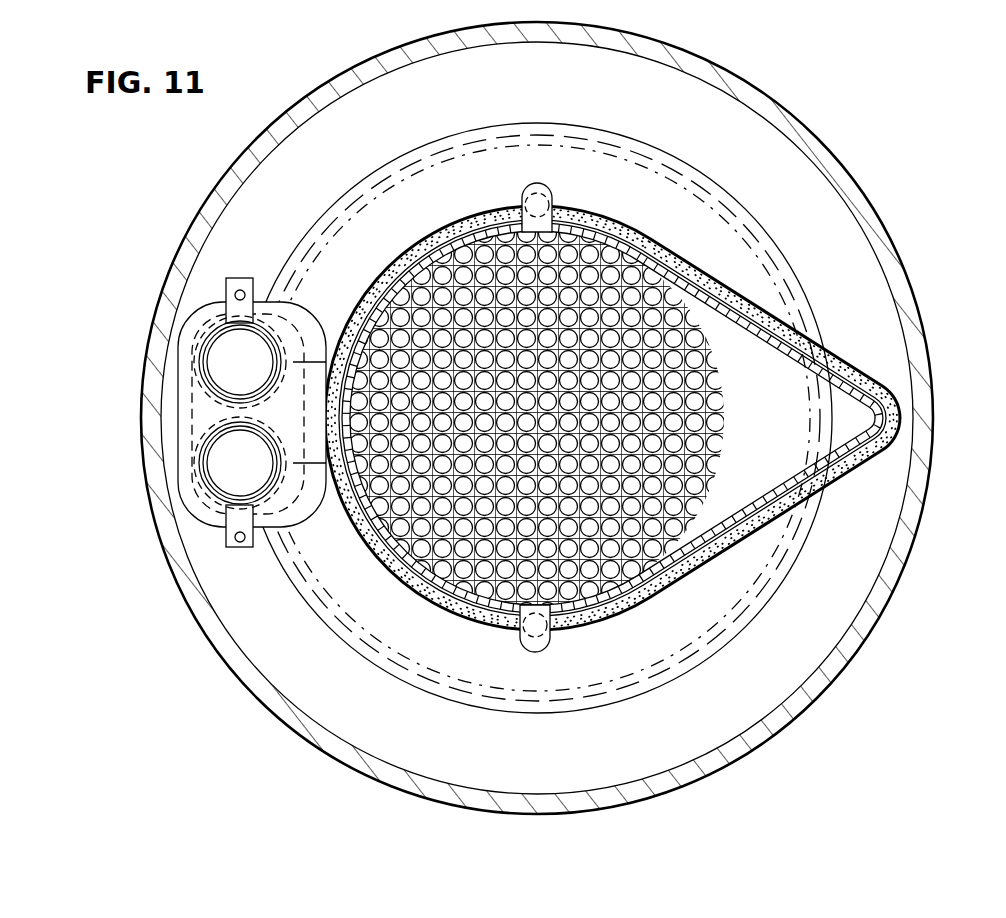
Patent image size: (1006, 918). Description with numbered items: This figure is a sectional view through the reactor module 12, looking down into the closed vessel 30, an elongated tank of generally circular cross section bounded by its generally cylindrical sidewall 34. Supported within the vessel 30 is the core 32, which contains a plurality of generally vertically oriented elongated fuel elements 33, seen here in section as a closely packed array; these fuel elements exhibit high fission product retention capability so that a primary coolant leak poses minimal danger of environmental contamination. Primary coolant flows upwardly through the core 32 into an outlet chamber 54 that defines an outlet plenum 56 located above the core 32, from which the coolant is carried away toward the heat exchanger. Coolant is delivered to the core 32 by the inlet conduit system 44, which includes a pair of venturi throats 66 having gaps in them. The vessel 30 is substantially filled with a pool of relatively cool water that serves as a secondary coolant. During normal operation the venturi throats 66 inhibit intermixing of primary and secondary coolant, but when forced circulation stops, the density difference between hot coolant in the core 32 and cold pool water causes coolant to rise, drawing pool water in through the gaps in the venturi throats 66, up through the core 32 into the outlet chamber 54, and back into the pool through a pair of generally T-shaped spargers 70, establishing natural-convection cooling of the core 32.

The reactor module 12 is at (908, 257).
The vessel 30 is at (918, 312).
The cylindrical sidewall 34 is at (932, 383).
The core 32 is at (737, 381).
The fuel elements 33 is at (480, 575).
The inlet conduit system 44 is at (190, 519).
The outlet chamber 54 is at (418, 250).
The outlet plenum 56 is at (735, 505).
The venturi throats 66 is at (227, 352).
The spargers 70 is at (552, 197).